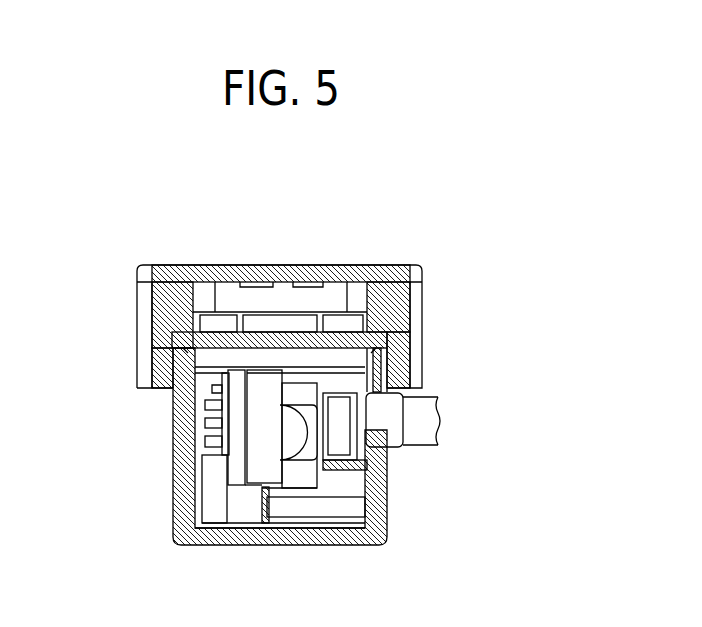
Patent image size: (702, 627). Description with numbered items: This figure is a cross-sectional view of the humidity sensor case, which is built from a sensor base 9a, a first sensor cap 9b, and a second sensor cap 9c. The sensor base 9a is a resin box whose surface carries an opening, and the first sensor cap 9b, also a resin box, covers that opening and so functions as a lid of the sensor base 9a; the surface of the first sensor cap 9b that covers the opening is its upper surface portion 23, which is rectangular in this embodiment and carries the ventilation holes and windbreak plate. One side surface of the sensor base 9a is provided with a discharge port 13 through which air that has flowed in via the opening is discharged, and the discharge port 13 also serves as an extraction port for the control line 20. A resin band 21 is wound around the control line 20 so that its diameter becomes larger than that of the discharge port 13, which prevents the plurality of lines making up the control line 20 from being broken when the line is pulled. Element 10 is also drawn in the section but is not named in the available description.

The sensor base 9a is at (189, 494).
The first sensor cap 9b is at (171, 275).
The second sensor cap 9c is at (339, 343).
The operating member 10 is at (260, 465).
The discharge port 13 is at (380, 415).
The control line 20 is at (300, 433).
The band 21 is at (338, 427).
The upper surface portion 23 is at (274, 267).